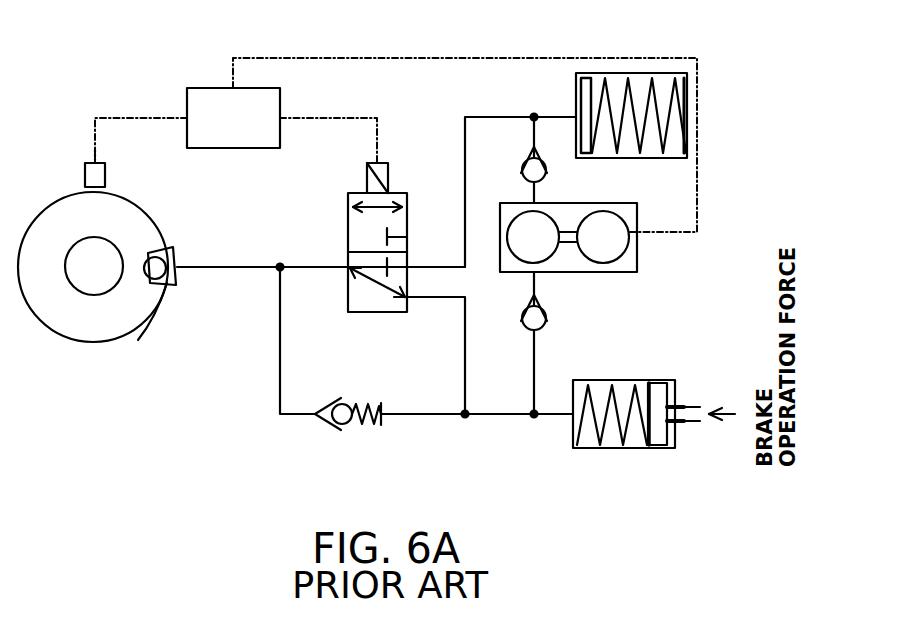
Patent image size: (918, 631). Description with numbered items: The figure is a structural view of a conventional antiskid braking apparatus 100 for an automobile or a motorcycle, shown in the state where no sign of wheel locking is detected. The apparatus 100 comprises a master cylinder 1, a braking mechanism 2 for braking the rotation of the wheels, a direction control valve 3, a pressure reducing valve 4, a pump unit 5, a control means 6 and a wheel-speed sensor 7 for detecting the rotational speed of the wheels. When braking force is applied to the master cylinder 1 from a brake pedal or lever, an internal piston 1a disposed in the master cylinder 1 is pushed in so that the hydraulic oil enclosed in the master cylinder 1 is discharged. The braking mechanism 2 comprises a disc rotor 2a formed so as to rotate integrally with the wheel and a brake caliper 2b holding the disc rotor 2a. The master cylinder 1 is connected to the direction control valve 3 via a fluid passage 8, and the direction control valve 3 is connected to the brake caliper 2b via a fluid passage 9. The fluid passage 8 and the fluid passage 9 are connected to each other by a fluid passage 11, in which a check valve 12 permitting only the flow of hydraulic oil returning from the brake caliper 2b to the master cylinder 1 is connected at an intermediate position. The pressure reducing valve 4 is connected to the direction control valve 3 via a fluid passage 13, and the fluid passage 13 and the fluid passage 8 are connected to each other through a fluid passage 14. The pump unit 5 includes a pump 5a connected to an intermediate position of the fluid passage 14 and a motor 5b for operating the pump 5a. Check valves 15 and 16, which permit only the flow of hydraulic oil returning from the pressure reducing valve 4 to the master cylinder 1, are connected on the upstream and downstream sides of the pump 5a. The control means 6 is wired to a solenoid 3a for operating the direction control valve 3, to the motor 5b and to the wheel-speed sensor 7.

The antiskid braking apparatus 100 is at (173, 95).
The control means 6 is at (233, 118).
The wheel-speed sensor 7 is at (106, 175).
The braking mechanism 2 is at (165, 408).
The disc rotor 2a is at (86, 337).
The brake caliper 2b is at (176, 285).
The fluid passage 9 is at (238, 269).
The fluid passage 11 is at (279, 378).
The check valve 12 is at (355, 430).
The fluid passage 8 is at (489, 414).
The direction control valve 3 is at (348, 238).
The solenoid 3a is at (367, 177).
The fluid passage 13 is at (465, 178).
The fluid passage 14 is at (533, 130).
The pressure reducing valve 4 is at (576, 86).
The check valve 15 is at (548, 178).
The pump unit 5 is at (640, 203).
The pump 5a is at (516, 262).
The motor 5b is at (620, 262).
The check valve 16 is at (545, 324).
The master cylinder 1 is at (593, 450).
The internal piston 1a is at (660, 449).